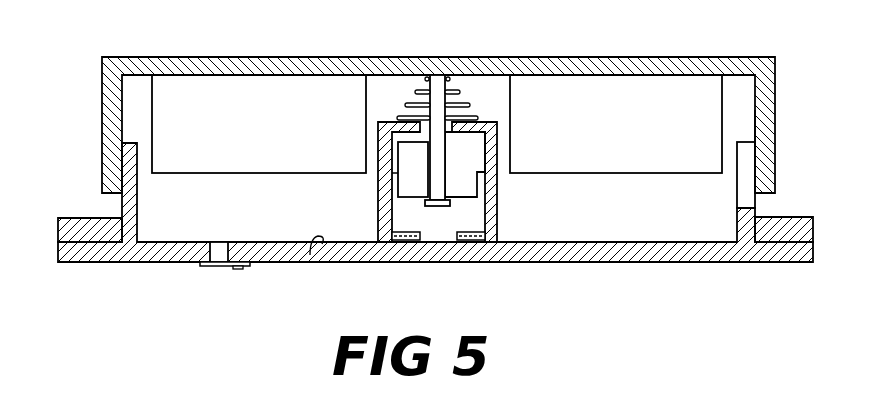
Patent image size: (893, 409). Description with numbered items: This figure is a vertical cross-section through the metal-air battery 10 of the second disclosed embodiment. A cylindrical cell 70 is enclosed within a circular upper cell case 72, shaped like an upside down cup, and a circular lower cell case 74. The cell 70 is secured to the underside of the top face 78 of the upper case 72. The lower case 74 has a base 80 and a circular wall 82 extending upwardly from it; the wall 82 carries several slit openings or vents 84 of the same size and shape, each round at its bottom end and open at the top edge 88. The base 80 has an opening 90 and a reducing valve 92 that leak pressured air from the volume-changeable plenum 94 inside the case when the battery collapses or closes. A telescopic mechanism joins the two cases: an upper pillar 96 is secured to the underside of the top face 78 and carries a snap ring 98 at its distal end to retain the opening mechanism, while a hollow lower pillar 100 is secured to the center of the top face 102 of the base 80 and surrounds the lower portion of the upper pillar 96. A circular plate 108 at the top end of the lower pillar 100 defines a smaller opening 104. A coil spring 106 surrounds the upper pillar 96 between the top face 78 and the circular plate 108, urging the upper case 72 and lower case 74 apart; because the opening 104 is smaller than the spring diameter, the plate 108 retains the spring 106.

The metal-air battery 10 is at (120, 35).
The cylindrical cell 70 is at (265, 138).
The upper cell case 72 is at (722, 57).
The lower cell case 74 is at (775, 262).
The top face 78 is at (658, 56).
The base 80 is at (540, 262).
The circular wall 82 is at (122, 205).
The slit openings or vents 84 is at (745, 198).
The top edge 88 is at (758, 136).
The opening 90 is at (220, 246).
The reducing valve 92 is at (215, 268).
The volume-changeable plenum 94 is at (283, 217).
The upper pillar 96 is at (437, 88).
The snap ring 98 is at (422, 206).
The lower pillar 100 is at (497, 198).
The top face 102 is at (310, 255).
The smaller opening 104 is at (422, 118).
The coil spring 106 is at (415, 91).
The circular plate 108 is at (486, 112).